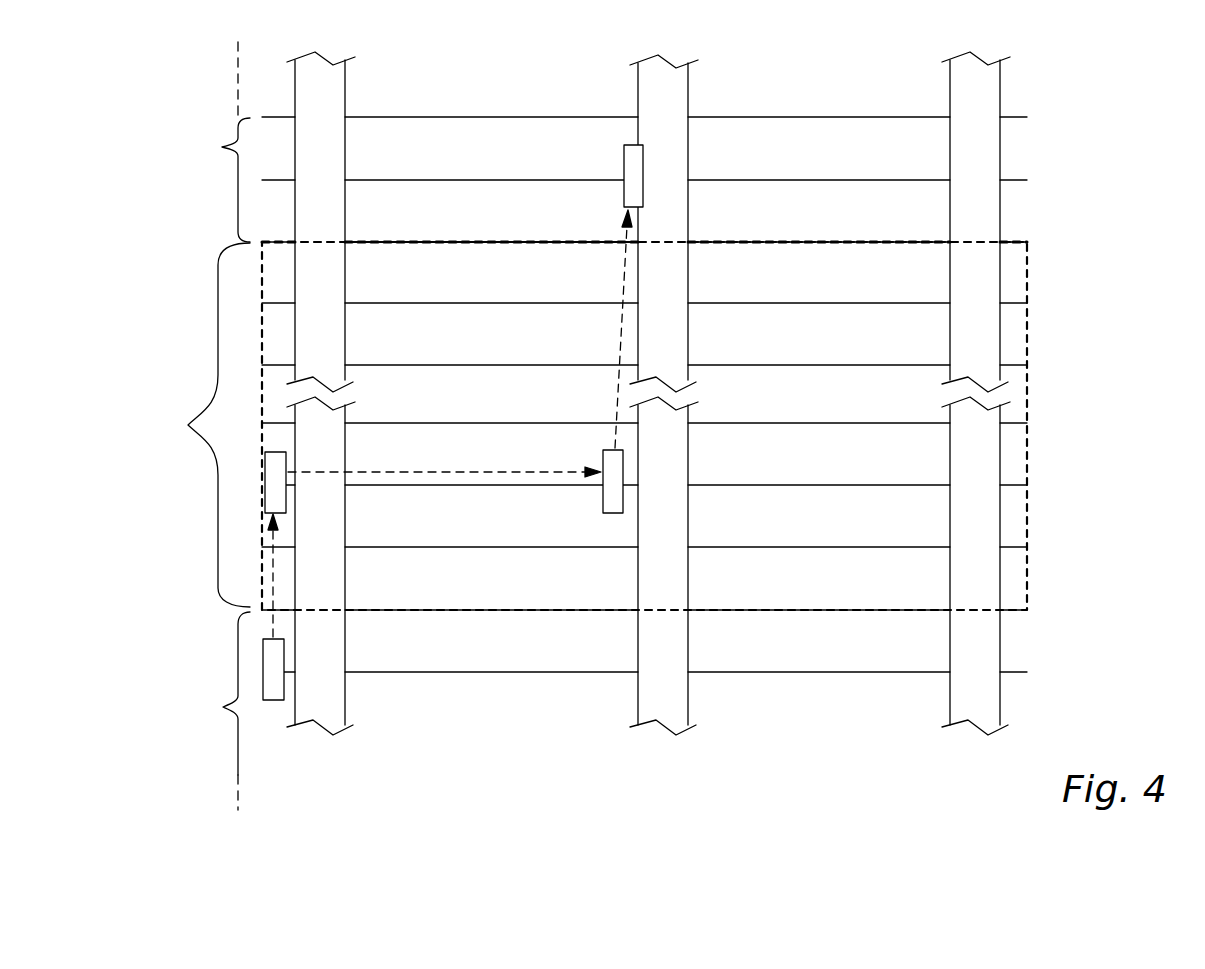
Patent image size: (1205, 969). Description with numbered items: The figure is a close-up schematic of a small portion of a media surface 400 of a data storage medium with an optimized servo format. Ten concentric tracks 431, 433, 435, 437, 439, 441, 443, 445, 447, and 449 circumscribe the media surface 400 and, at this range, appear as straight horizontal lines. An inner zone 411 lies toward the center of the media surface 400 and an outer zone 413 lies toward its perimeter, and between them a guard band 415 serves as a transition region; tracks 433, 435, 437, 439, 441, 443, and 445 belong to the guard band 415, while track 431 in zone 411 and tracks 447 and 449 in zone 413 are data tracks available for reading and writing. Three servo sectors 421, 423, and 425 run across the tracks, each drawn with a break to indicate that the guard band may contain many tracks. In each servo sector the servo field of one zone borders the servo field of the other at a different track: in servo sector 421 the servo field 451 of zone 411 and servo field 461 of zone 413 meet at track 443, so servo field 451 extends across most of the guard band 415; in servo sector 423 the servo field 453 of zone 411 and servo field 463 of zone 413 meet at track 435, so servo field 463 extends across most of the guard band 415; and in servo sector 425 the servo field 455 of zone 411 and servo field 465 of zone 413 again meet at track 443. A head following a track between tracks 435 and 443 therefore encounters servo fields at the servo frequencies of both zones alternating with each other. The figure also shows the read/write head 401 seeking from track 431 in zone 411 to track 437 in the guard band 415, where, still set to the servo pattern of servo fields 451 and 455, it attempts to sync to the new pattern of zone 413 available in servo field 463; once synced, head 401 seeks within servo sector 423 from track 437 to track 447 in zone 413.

The media surface 400 is at (1064, 75).
The read/write head 401 is at (270, 703).
The zone 411 is at (222, 693).
The zone 413 is at (218, 180).
The guard band 415 is at (591, 426).
The servo sector 421 is at (342, 430).
The servo sector 423 is at (685, 431).
The servo sector 425 is at (944, 426).
The track 431 is at (1050, 672).
The track 433 is at (1050, 610).
The track 435 is at (1050, 547).
The track 437 is at (1050, 485).
The track 439 is at (1050, 423).
The track 441 is at (1050, 365).
The track 443 is at (1050, 303).
The track 445 is at (1050, 242).
The track 447 is at (1050, 180).
The track 449 is at (1050, 117).
The servo field 451 is at (345, 503).
The servo field 453 is at (688, 620).
The servo field 455 is at (950, 560).
The servo field 461 is at (345, 138).
The servo field 463 is at (688, 318).
The servo field 465 is at (950, 200).